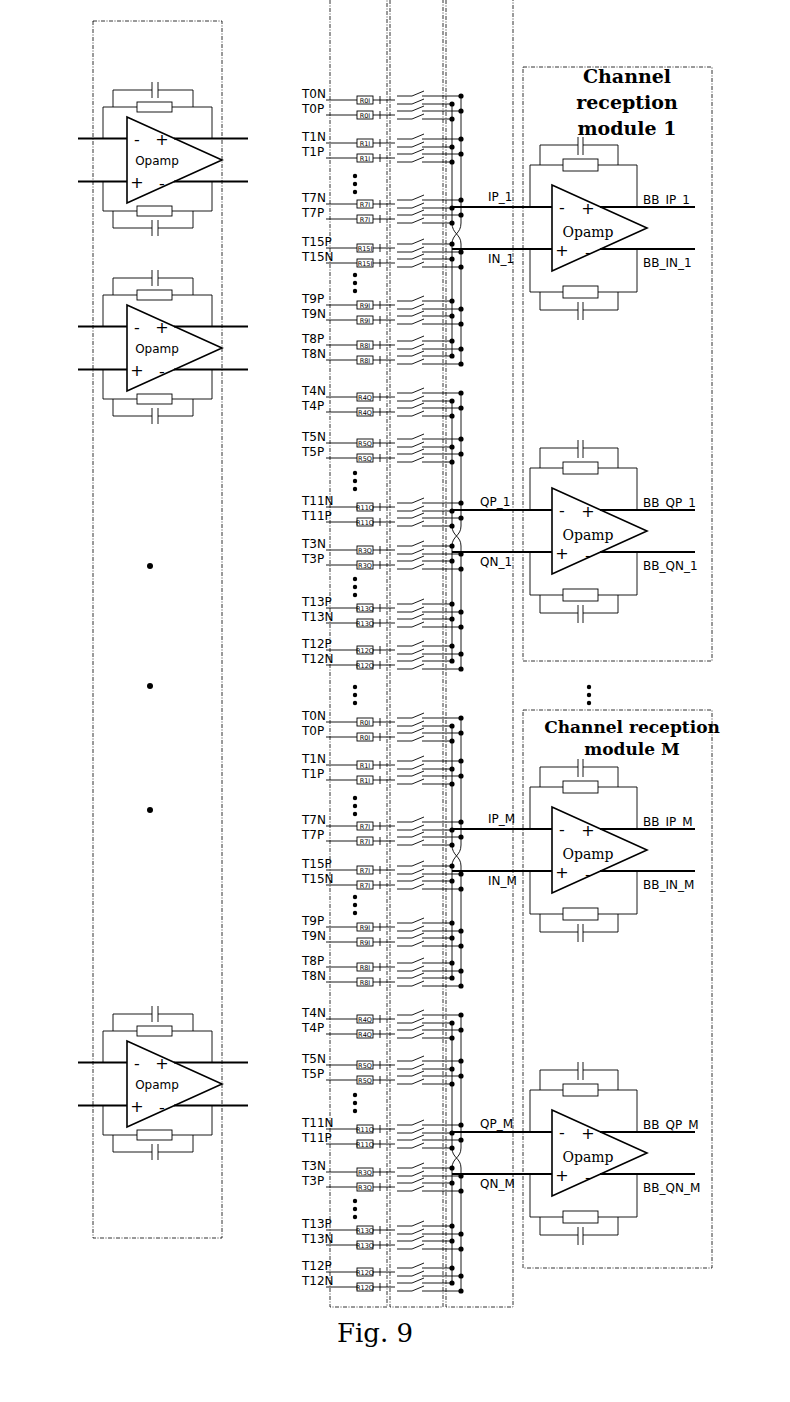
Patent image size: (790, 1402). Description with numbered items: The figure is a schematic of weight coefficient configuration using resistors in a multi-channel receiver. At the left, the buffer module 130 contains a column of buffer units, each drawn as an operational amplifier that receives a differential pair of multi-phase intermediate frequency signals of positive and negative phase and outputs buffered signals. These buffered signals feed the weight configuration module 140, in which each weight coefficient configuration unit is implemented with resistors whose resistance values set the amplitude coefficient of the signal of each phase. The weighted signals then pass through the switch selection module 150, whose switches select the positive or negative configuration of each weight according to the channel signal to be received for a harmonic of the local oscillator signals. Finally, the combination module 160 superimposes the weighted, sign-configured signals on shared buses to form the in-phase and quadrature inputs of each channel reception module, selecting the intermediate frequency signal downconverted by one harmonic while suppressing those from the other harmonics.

The buffer module 130 is at (170, 66).
The weight configuration module 140 is at (346, 67).
The switch selection module 150 is at (405, 67).
The combination module 160 is at (466, 66).